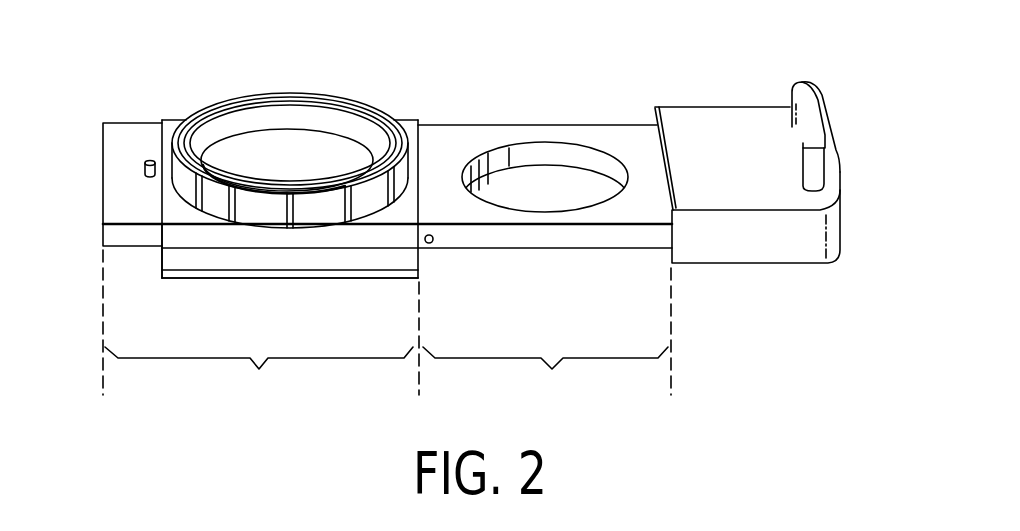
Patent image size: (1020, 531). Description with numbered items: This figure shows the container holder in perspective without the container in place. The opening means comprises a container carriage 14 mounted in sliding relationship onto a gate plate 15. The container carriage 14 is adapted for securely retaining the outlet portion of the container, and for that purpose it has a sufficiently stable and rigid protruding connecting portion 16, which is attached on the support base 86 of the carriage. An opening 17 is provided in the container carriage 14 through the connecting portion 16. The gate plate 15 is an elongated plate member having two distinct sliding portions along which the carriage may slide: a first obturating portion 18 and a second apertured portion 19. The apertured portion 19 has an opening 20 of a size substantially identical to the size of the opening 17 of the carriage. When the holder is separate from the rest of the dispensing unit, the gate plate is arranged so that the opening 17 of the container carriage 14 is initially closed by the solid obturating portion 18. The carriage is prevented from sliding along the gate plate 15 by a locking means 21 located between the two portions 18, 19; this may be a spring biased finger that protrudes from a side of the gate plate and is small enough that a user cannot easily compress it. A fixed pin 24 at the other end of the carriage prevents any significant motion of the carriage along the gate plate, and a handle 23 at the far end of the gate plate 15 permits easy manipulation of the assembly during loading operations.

The container carriage 14 is at (315, 119).
The gate plate 15 is at (526, 106).
The connecting portion 16 is at (328, 98).
The opening 17 is at (358, 150).
The obturating portion 18 is at (261, 327).
The apertured portion 19 is at (547, 336).
The opening 20 is at (581, 159).
The locking means 21 is at (432, 244).
The handle 23 is at (828, 131).
The fixed pin 24 is at (146, 160).
The support base 86 is at (176, 202).